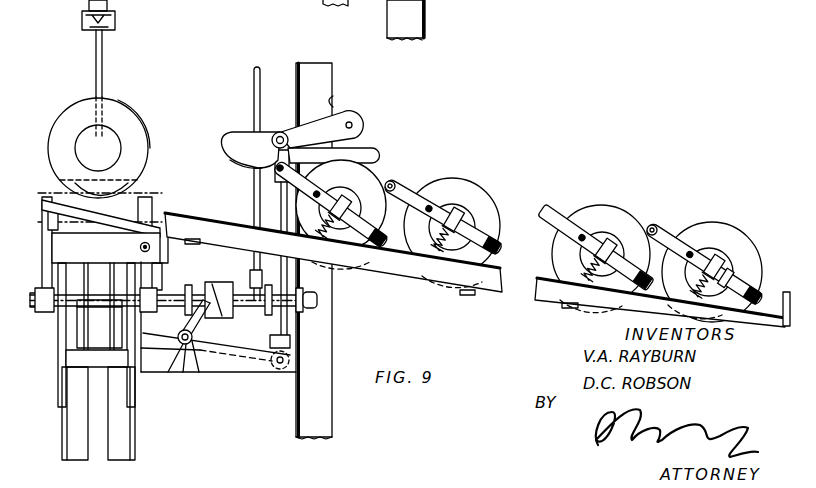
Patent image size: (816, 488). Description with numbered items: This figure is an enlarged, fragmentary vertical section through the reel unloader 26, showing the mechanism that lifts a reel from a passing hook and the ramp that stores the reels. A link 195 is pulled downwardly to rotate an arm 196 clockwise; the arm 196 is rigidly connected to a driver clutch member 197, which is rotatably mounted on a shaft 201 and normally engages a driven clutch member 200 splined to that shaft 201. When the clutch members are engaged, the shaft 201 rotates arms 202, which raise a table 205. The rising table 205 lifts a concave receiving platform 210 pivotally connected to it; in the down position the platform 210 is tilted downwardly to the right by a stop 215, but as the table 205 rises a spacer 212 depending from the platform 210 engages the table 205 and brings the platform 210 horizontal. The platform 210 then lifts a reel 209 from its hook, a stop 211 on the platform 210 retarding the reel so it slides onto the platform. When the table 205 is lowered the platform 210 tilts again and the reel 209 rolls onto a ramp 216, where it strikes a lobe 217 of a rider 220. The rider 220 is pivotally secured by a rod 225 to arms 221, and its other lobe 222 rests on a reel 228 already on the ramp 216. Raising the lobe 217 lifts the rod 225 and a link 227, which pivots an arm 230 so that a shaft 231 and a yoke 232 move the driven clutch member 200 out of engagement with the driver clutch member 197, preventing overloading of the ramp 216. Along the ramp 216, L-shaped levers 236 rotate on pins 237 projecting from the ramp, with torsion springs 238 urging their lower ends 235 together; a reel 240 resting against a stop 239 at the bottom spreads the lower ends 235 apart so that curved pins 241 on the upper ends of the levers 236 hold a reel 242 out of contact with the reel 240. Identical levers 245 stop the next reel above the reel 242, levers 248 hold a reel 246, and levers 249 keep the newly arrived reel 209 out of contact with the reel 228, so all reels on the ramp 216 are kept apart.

The unloader 26 is at (78, 67).
The link 195 is at (258, 67).
The arm 196 is at (253, 281).
The driver clutch member 197 is at (221, 295).
The driven clutch member 200 is at (215, 311).
The shaft 201 is at (312, 300).
The arms 202 is at (74, 304).
The table 205 is at (67, 258).
The reel 209 is at (122, 118).
The concave receiving platform 210 is at (53, 188).
The stop 211 is at (116, 218).
The spacer 212 is at (48, 229).
The stop 215 is at (50, 225).
The ramp 216 is at (413, 275).
The lobe 217 is at (243, 167).
The rider 220 is at (238, 130).
The arms 221 is at (344, 127).
The lobe 222 is at (384, 160).
The rod 225 is at (279, 131).
The link 227 is at (279, 203).
The reel 228 is at (385, 177).
The arm 230 is at (250, 354).
The shaft 231 is at (178, 352).
The yoke 232 is at (178, 338).
The lower ends 235 is at (745, 284).
The L-shaped levers 236 is at (674, 235).
The pins 237 is at (726, 252).
The torsion springs 238 is at (585, 259).
The stop 239 is at (786, 292).
The reel 240 is at (695, 228).
The curved pins 241 is at (652, 225).
The reel 242 is at (588, 214).
The levers 245 is at (552, 212).
The reel 246 is at (480, 197).
The levers 248 is at (493, 227).
The levers 249 is at (373, 263).